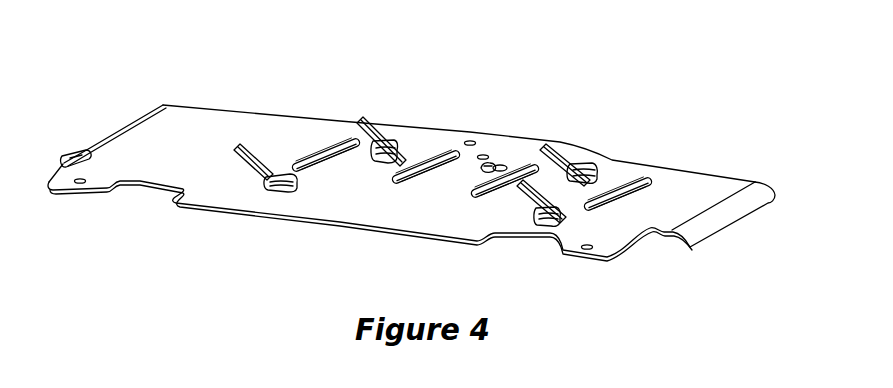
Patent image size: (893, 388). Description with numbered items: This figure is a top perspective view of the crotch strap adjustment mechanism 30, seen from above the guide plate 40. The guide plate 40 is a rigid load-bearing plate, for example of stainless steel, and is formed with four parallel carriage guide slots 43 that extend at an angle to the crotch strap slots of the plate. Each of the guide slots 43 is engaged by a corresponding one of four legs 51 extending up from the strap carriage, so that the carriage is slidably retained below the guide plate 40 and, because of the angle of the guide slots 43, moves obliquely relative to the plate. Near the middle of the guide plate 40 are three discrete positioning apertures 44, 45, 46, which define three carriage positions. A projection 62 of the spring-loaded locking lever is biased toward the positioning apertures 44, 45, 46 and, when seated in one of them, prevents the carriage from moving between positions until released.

The crotch strap adjustment mechanism 30 is at (684, 144).
The guide plate 40 is at (183, 100).
The carriage guide slots 43 is at (254, 148).
The positioning aperture 44 is at (505, 163).
The positioning aperture 45 is at (486, 153).
The positioning aperture 46 is at (470, 139).
The legs 51 is at (378, 136).
The projection 62 is at (478, 171).